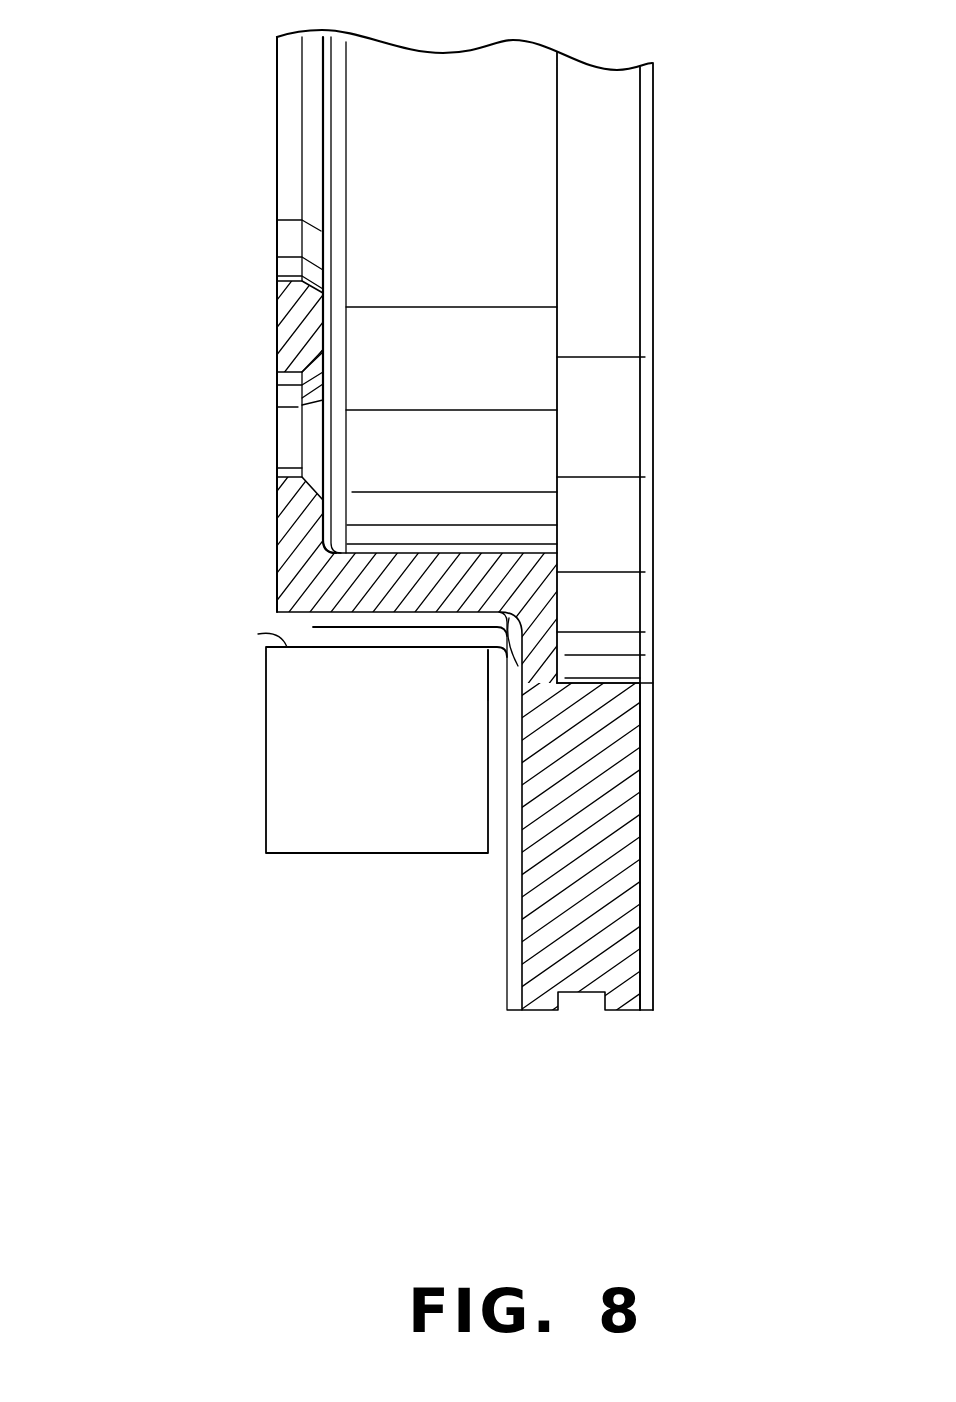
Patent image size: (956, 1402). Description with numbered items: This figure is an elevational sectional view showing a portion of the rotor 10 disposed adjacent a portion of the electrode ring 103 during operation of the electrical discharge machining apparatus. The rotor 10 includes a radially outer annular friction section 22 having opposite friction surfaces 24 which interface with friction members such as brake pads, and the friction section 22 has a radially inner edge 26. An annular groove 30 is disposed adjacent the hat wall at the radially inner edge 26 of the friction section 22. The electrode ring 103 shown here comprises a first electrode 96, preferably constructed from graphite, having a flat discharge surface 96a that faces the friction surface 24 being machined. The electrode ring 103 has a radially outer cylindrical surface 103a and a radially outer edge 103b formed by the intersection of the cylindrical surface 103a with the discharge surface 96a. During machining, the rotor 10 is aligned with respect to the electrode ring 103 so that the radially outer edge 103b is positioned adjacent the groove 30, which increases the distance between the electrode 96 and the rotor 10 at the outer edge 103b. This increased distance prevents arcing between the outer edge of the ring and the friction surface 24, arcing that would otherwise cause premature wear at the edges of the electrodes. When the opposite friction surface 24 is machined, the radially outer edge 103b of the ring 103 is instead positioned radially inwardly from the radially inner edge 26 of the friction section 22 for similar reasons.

The rotor 10 is at (444, 613).
The annular friction section 22 is at (568, 1037).
The friction surface 24 is at (507, 945).
The radially inner edge 26 is at (655, 683).
The annular groove 30 is at (313, 627).
The first electrode 96 is at (382, 763).
The discharge surface 96a is at (483, 681).
The electrode ring 103 is at (427, 718).
The radially outer cylindrical surface 103a is at (258, 634).
The radially outer edge 103b is at (505, 637).